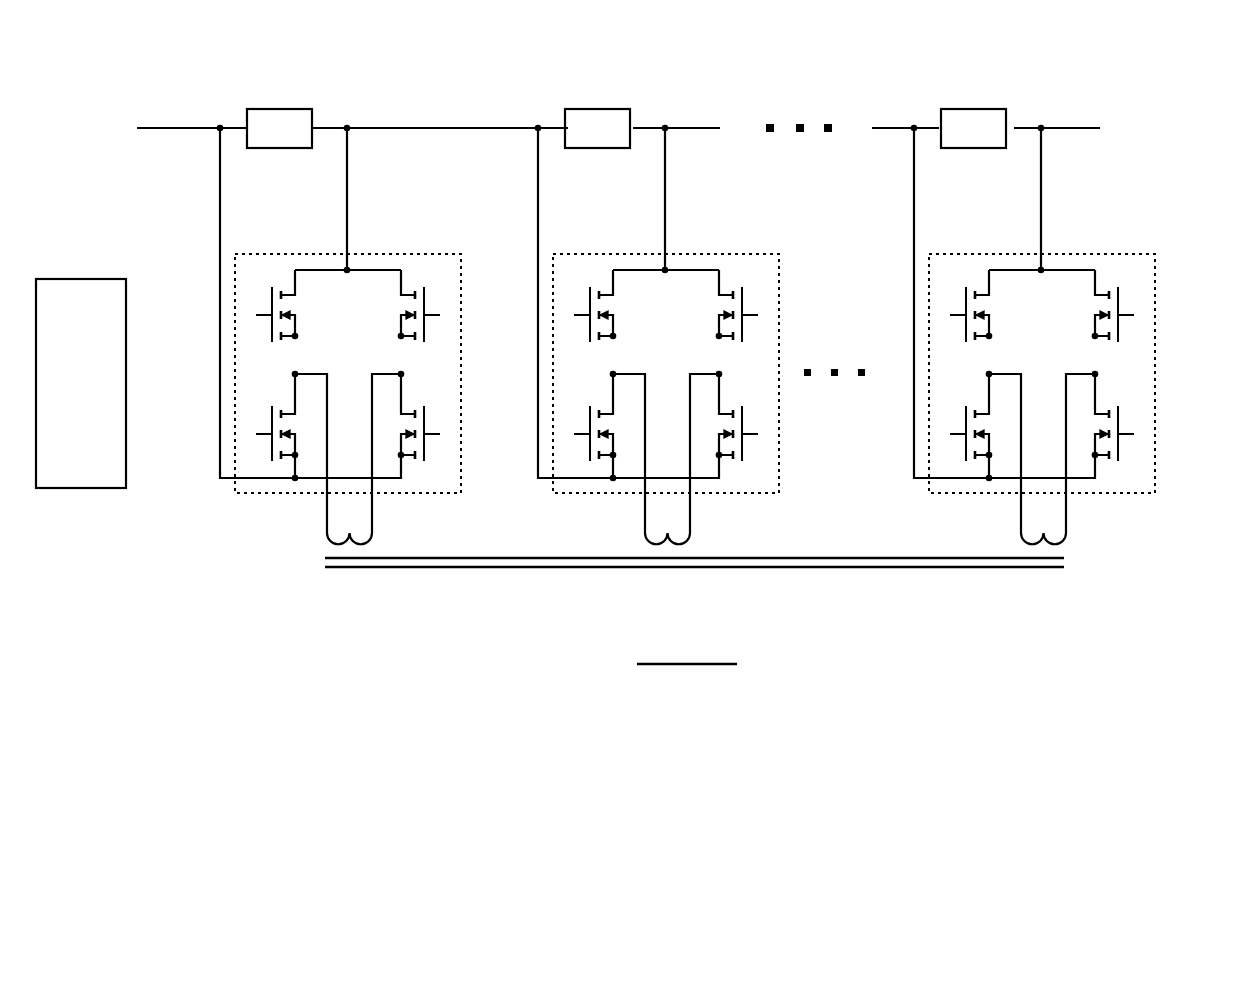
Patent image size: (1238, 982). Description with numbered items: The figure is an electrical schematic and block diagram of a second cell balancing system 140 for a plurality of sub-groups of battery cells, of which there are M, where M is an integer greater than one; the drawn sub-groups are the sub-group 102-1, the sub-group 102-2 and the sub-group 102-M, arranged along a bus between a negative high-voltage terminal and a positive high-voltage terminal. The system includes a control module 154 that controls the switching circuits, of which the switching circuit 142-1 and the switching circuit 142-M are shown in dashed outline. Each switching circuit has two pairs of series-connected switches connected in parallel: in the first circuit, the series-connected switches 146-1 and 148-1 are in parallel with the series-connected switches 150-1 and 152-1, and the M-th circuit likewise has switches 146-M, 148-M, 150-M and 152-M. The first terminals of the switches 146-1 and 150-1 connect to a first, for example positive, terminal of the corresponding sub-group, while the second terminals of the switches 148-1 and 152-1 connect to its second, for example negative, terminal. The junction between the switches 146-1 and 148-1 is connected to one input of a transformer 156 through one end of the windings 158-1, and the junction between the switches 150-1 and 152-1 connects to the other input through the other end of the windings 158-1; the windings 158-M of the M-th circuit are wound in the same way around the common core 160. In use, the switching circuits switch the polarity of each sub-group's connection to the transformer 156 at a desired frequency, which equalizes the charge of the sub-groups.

The second cell balancing system 140 is at (176, 80).
The sub-group 102-1 is at (294, 108).
The sub-group 102-2 is at (641, 107).
The sub-group 102-M is at (1021, 105).
The switching circuit 142-1 is at (265, 493).
The switching circuit 142-M is at (1026, 350).
The switch 146-1 is at (256, 298).
The switch 146-M is at (918, 306).
The switch 148-1 is at (252, 412).
The switch 148-M is at (918, 426).
The switch 150-1 is at (417, 281).
The switch 150-M is at (1149, 283).
The switch 152-1 is at (424, 481).
The switch 152-M is at (1149, 450).
The control module 154 is at (85, 279).
The transformer 156 is at (516, 606).
The windings 158-1 is at (314, 543).
The windings 158-M is at (1093, 474).
The core 160 is at (694, 569).